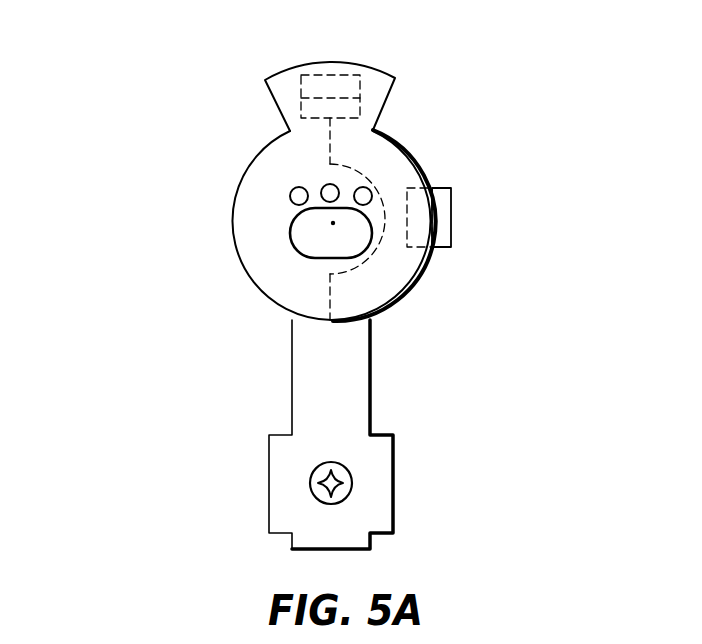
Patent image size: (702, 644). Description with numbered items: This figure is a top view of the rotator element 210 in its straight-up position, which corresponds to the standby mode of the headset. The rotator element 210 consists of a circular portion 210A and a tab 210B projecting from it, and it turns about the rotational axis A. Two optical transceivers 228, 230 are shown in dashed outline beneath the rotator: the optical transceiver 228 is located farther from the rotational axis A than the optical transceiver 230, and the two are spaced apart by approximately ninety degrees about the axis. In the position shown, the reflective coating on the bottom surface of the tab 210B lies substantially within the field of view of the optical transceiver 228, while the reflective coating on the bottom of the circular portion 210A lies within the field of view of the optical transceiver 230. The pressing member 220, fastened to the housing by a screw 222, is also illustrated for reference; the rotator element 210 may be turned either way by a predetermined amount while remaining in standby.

The rotator element 210 is at (132, 273).
The circular portion 210A is at (401, 152).
The tab 210B is at (266, 80).
The optical transceiver 228 is at (327, 75).
The optical transceiver 230 is at (452, 212).
The pressing member 220 is at (371, 369).
The screw 222 is at (352, 473).
The rotational axis A is at (333, 223).